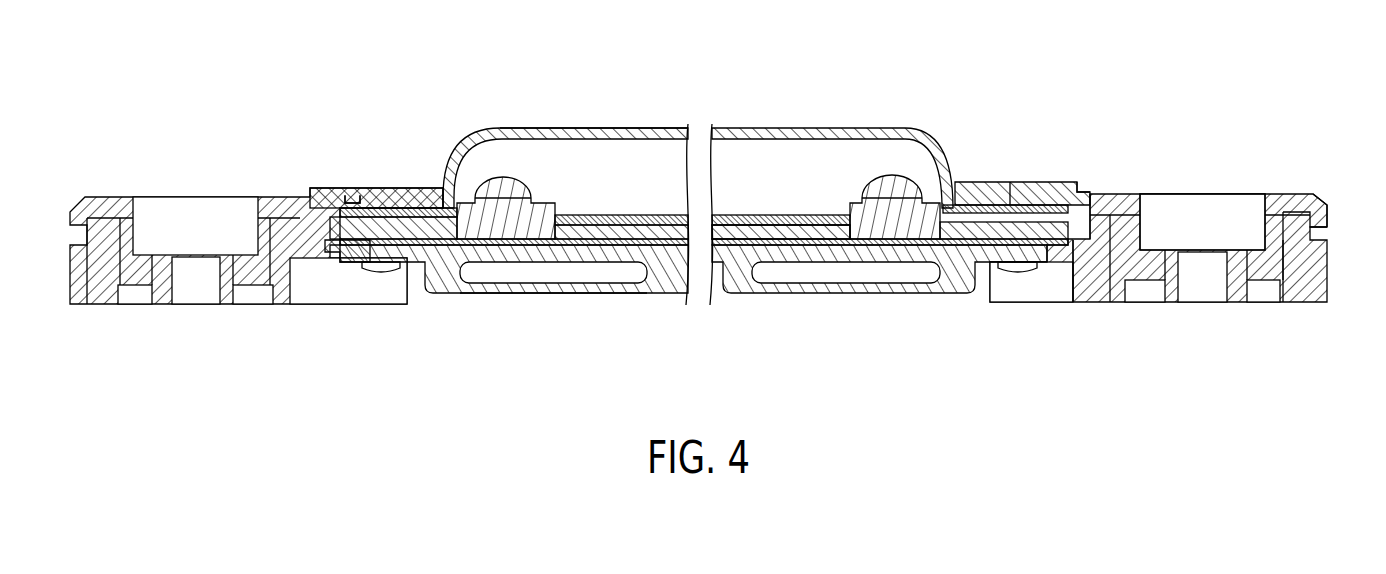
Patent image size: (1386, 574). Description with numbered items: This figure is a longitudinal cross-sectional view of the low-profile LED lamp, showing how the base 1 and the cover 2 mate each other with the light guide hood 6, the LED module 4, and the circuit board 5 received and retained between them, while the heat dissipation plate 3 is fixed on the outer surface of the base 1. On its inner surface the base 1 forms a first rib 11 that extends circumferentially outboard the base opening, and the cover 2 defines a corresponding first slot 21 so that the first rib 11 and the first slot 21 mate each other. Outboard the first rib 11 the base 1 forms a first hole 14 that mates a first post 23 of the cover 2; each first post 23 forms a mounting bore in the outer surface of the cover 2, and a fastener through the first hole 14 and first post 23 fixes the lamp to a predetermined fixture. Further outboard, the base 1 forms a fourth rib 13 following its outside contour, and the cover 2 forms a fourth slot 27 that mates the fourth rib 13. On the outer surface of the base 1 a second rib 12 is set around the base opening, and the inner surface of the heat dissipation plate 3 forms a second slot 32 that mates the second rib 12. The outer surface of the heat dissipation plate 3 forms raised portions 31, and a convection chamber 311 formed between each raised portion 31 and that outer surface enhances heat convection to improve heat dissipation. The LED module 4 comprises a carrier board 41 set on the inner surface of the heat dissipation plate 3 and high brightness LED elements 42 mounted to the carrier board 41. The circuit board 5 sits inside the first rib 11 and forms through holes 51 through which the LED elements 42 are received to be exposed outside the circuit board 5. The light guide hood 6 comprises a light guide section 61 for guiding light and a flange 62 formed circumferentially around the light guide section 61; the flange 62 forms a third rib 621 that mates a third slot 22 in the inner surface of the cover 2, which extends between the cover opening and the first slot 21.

The base 1 is at (100, 307).
The cover 2 is at (108, 196).
The heat dissipation plate 3 is at (693, 314).
The LED module 4 is at (698, 129).
The circuit board 5 is at (699, 136).
The light guide hood 6 is at (704, 124).
The first rib 11 is at (1092, 205).
The second rib 12 is at (1074, 242).
The fourth rib 13 is at (1318, 200).
The first hole 14 is at (1143, 240).
The first slot 21 is at (1078, 183).
The third slot 22 is at (353, 205).
The first post 23 is at (1275, 243).
The fourth slot 27 is at (1292, 207).
The raised portion 31 is at (552, 296).
The second slot 32 is at (1050, 303).
The carrier board 41 is at (600, 237).
The high brightness LED element 42 is at (503, 198).
The through hole 51 is at (822, 205).
The light guide section 61 is at (650, 128).
The flange 62 is at (425, 206).
The convection chamber 311 is at (580, 272).
The third rib 621 is at (326, 197).